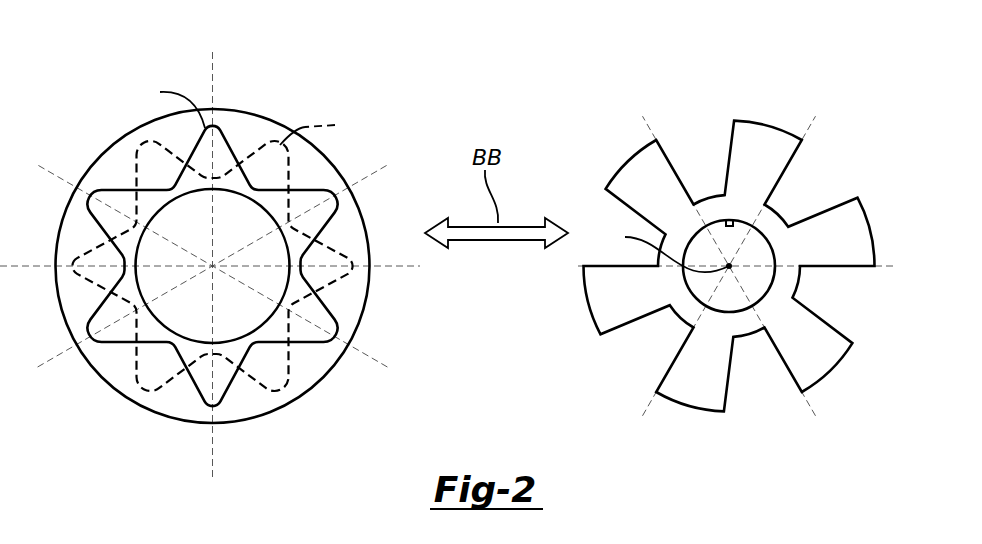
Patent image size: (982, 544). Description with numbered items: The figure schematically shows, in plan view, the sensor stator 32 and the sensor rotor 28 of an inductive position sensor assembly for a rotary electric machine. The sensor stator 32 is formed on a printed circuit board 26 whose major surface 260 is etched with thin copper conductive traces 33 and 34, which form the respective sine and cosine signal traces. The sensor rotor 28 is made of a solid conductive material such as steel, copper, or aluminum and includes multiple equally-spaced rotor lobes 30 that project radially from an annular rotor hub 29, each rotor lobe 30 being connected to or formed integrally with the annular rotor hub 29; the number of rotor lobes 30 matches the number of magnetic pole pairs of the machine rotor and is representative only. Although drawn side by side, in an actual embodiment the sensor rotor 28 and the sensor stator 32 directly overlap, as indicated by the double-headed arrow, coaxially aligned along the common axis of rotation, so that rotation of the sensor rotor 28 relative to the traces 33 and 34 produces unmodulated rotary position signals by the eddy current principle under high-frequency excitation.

The printed circuit board 26 is at (117, 365).
The sensor rotor 28 is at (740, 229).
The annular rotor hub 29 is at (775, 220).
The rotor lobes 30 is at (748, 169).
The sensor stator 32 is at (227, 257).
The conductive trace (sine signal trace) 33 is at (231, 390).
The conductive trace (cosine signal trace) 34 is at (288, 361).
The major surface 260 is at (349, 311).